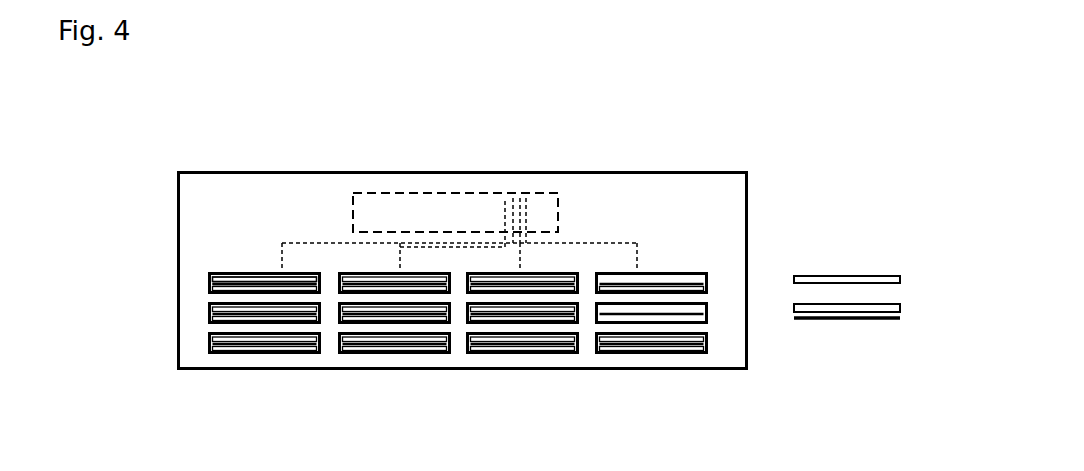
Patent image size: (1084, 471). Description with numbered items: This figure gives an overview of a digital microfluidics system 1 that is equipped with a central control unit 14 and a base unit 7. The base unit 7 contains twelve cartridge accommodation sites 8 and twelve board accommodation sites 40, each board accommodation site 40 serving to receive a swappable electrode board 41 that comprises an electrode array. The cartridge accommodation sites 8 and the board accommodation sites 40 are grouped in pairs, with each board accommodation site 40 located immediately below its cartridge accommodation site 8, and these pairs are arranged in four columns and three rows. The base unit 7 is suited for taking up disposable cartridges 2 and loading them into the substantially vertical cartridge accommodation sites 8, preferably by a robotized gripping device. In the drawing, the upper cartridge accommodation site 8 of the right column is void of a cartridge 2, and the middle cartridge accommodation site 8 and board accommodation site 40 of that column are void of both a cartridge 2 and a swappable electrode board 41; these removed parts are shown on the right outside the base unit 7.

The digital microfluidics system 1 is at (783, 174).
The cartridge 2 is at (235, 280).
The base unit 7 is at (193, 227).
The cartridge accommodation site 8 is at (241, 264).
The central control unit 14 is at (403, 227).
The board accommodation site 40 is at (192, 291).
The swappable electrode board 41 is at (228, 292).